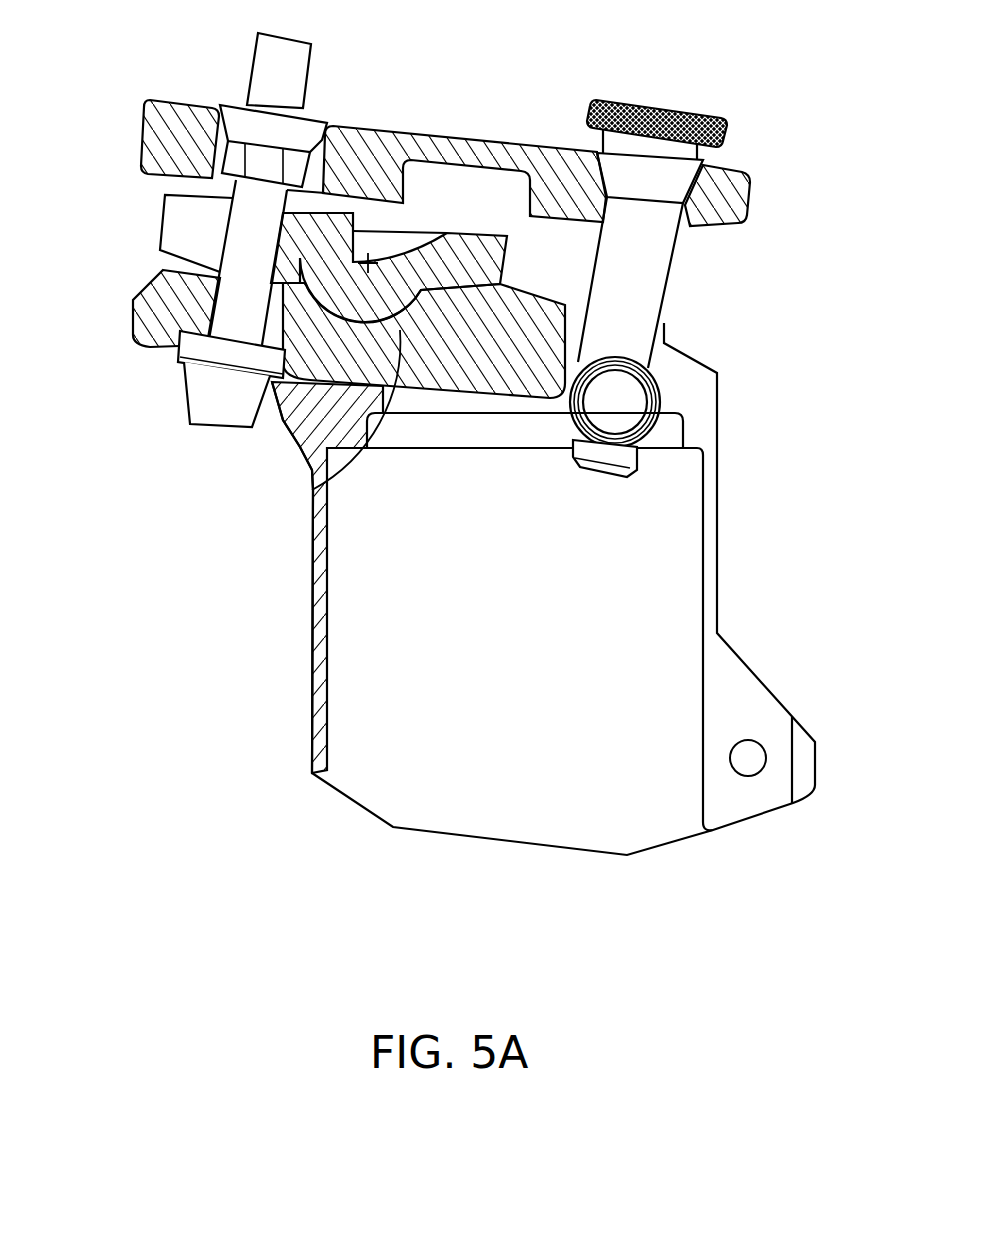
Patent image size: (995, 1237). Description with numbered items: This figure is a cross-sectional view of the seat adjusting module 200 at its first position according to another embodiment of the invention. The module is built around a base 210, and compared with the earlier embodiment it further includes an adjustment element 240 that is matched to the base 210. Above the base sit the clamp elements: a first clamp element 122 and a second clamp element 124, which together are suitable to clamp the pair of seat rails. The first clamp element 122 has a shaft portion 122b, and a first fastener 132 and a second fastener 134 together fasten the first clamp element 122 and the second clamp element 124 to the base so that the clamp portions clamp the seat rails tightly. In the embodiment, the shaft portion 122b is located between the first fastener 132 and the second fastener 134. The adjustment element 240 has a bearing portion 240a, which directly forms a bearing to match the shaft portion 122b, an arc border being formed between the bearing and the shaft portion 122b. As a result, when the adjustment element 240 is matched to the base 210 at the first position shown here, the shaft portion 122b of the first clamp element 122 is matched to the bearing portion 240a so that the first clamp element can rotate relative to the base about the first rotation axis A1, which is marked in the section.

The seat adjusting module 200 is at (270, 858).
The base 210 is at (307, 433).
The bearing portion 240a is at (313, 483).
The adjustment element 240 is at (527, 313).
The shaft portion 122b is at (360, 250).
The first rotation axis A1 is at (347, 350).
The first clamp element 122 is at (180, 227).
The second clamp element 124 is at (163, 143).
The first fastener 132 is at (213, 398).
The second fastener 134 is at (655, 100).